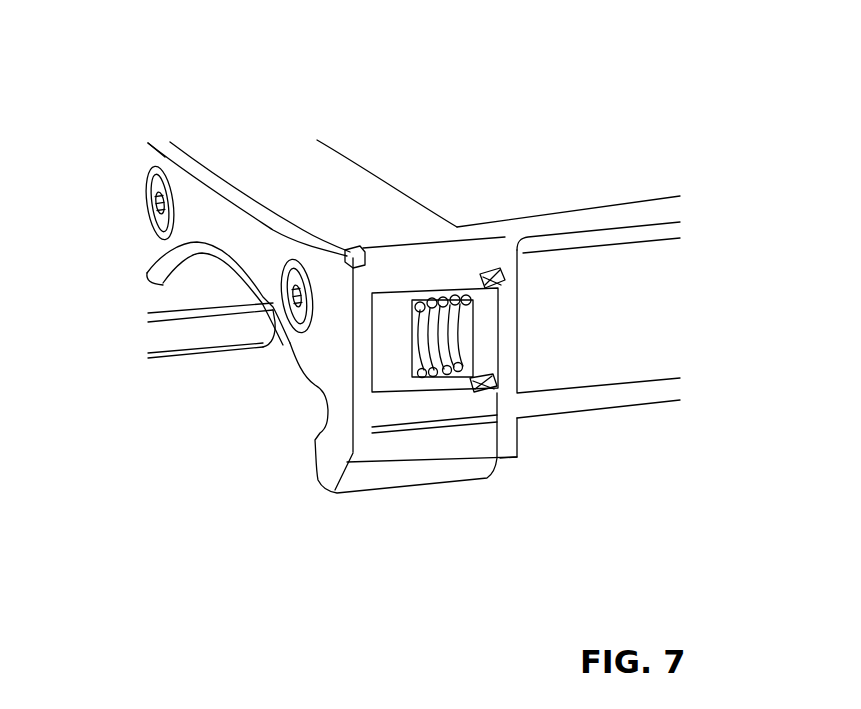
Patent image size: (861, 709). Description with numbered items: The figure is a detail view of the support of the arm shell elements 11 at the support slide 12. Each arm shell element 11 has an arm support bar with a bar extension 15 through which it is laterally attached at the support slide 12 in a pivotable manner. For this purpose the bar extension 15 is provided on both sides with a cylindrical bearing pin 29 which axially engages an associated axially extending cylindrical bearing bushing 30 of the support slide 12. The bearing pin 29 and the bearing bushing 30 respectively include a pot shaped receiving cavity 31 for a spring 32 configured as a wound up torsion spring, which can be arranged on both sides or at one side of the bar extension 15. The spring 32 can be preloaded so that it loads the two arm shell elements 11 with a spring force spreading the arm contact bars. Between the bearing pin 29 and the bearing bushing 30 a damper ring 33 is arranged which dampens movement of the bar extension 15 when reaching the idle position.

The arm shell element 11 is at (652, 424).
The support slide 12 is at (265, 175).
The bar extension 15 is at (628, 220).
The bearing pin 29 is at (455, 295).
The bearing bushing 30 is at (442, 395).
The receiving cavity 31 is at (421, 301).
The spring 32 is at (442, 338).
The damper ring 33 is at (489, 275).